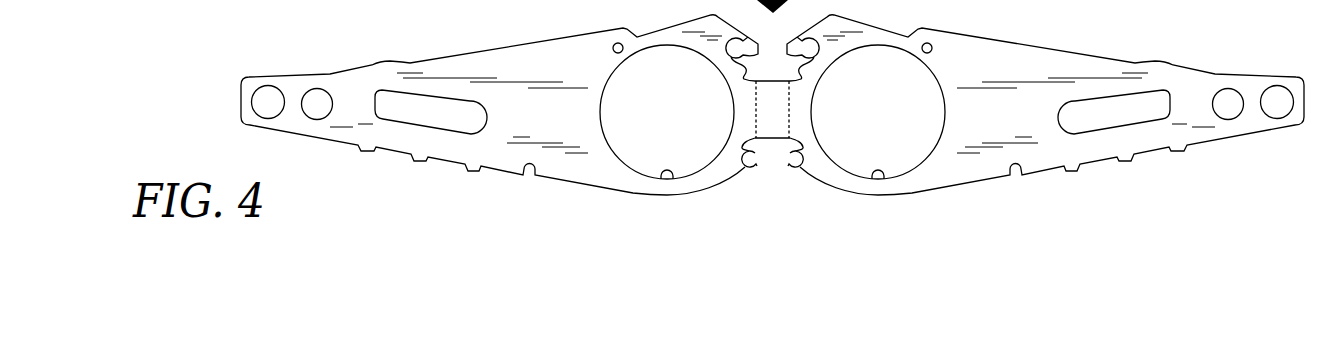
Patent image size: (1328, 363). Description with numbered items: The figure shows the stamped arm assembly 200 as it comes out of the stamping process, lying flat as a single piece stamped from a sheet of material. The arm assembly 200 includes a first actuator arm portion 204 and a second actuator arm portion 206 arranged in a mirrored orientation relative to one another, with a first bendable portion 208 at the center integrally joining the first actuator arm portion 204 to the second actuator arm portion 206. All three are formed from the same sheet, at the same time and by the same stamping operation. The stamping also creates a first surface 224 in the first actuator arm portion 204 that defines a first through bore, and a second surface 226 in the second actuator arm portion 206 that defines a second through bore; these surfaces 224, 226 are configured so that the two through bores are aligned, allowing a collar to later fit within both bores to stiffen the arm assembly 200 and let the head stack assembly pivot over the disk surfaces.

The arm assembly 200 is at (1148, 34).
The first actuator arm portion 204 is at (985, 170).
The second actuator arm portion 206 is at (572, 170).
The first bendable portion 208 is at (774, 127).
The first surface 224 is at (883, 177).
The second surface 226 is at (671, 178).